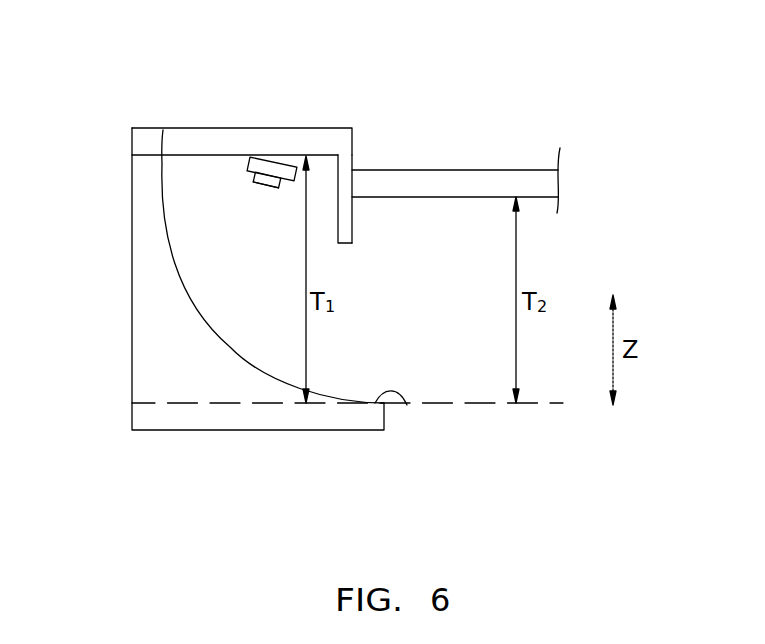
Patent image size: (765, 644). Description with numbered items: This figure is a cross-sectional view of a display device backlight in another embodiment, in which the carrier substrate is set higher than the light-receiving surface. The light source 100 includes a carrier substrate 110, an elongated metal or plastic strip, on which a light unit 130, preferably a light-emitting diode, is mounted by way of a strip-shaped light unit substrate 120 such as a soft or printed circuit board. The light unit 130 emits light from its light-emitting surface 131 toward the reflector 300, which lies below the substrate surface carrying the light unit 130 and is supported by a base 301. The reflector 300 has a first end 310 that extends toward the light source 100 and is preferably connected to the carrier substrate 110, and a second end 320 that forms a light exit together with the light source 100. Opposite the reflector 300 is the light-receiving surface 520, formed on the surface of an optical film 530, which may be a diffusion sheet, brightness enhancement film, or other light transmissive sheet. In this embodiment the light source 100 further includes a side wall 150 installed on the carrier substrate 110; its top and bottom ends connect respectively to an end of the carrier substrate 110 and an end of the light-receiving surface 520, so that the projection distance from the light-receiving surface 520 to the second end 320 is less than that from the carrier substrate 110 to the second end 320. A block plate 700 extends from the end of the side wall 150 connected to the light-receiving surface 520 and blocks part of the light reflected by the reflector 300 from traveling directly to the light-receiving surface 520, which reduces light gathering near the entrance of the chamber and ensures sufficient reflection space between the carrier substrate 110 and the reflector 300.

The light source 100 is at (351, 52).
The carrier substrate 110 is at (344, 185).
The light unit substrate 120 is at (263, 164).
The light unit 130 is at (281, 170).
The light-emitting surface 131 is at (262, 187).
The side wall 150 is at (326, 143).
The reflector 300 is at (239, 353).
The base 301 is at (260, 412).
The first end 310 is at (163, 130).
The second end 320 is at (407, 405).
The light-receiving surface 520 is at (535, 198).
The optical film 530 is at (493, 185).
The block plate 700 is at (347, 222).